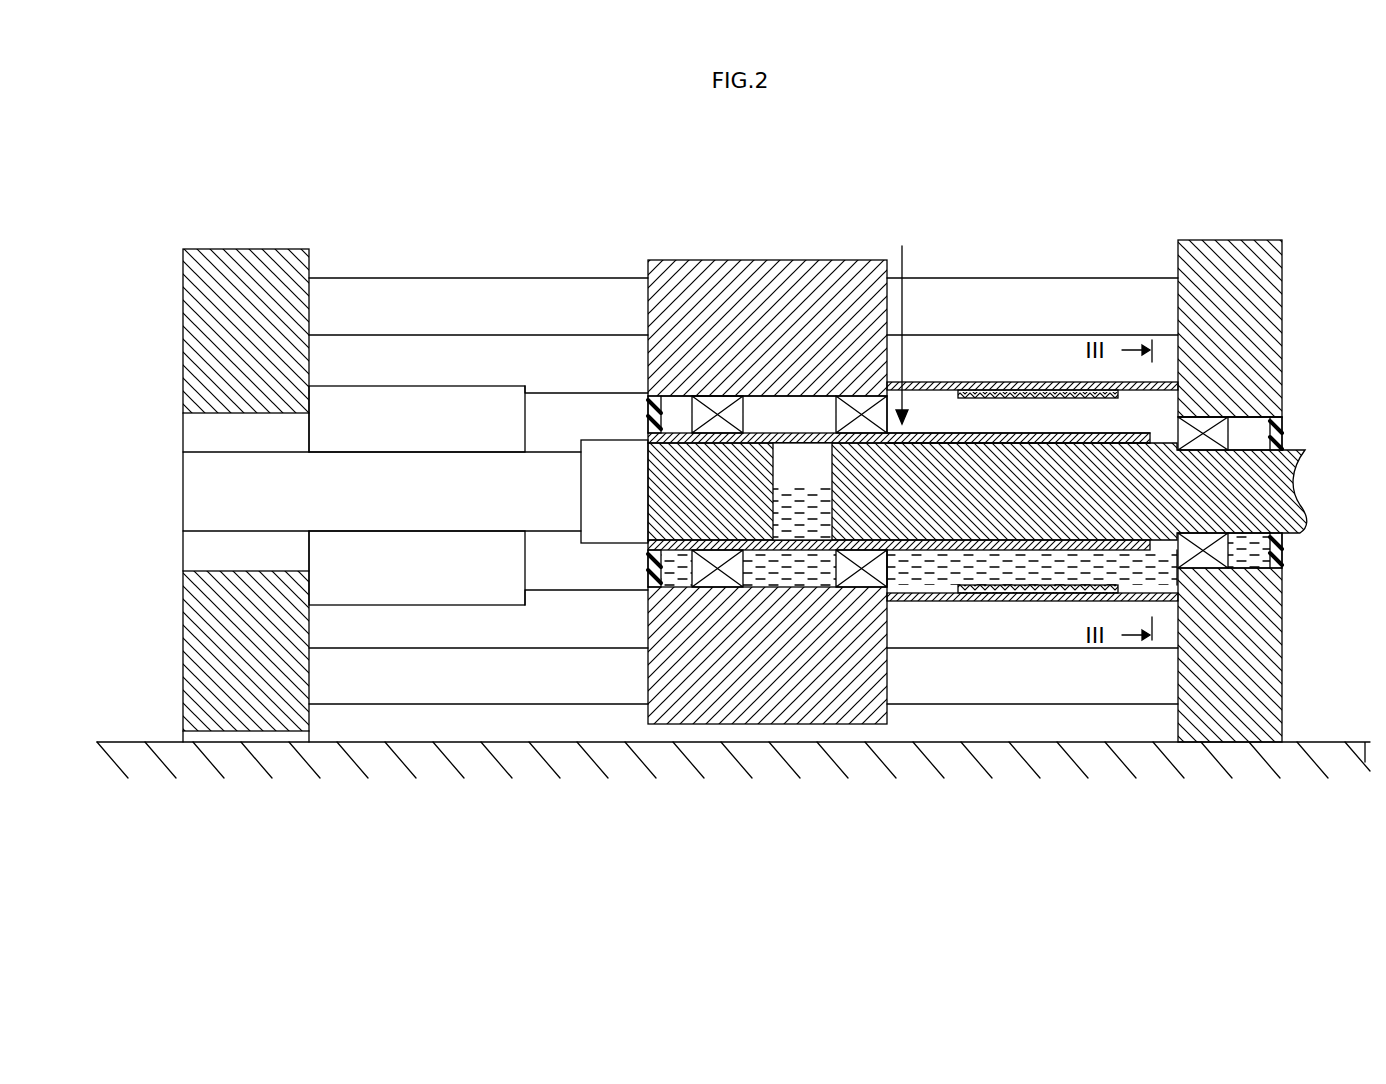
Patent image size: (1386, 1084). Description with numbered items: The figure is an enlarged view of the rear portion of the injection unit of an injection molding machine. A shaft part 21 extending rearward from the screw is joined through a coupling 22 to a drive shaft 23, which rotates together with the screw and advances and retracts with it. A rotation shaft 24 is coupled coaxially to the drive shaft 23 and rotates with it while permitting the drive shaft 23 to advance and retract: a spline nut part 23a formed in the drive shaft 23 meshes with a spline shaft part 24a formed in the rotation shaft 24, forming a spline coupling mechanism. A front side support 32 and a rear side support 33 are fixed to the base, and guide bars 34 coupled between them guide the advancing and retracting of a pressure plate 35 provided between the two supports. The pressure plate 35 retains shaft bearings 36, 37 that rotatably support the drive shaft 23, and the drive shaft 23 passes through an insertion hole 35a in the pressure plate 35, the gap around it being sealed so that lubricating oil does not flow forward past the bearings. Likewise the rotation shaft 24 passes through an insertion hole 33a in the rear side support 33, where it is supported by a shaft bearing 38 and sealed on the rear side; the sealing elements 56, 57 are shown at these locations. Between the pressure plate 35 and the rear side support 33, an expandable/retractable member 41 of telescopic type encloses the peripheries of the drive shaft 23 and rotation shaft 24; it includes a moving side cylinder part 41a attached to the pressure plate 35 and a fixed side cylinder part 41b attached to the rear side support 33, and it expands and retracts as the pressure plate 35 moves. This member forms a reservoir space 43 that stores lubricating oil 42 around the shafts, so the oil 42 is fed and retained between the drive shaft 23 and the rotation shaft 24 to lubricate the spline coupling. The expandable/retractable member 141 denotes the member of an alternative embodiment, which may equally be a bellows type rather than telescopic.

The shaft part 21 is at (183, 490).
The coupling 22 is at (592, 452).
The drive shaft 23 is at (648, 520).
The spline nut part 23a is at (932, 433).
The rotation shaft 24 is at (1300, 486).
The spline shaft part 24a is at (1035, 443).
The front side support 32 is at (264, 264).
The rear side support 33 is at (1226, 242).
The insertion hole 33a is at (1258, 415).
The guide bars 34 is at (385, 292).
The pressure plate 35 is at (749, 268).
The insertion hole 35a is at (787, 396).
The shaft bearing 36 is at (743, 413).
The shaft bearing 37 is at (836, 414).
The shaft bearing 38 is at (1220, 435).
The expandable/retractable member 41 is at (1032, 386).
The moving side cylinder part 41a is at (992, 382).
The fixed side cylinder part 41b is at (1045, 390).
The lubricating oil 42 is at (800, 492).
The reservoir space 43 is at (903, 320).
The seal 56 is at (648, 414).
The seal 57 is at (1276, 432).
The expandable/retractable member 141 is at (413, 424).